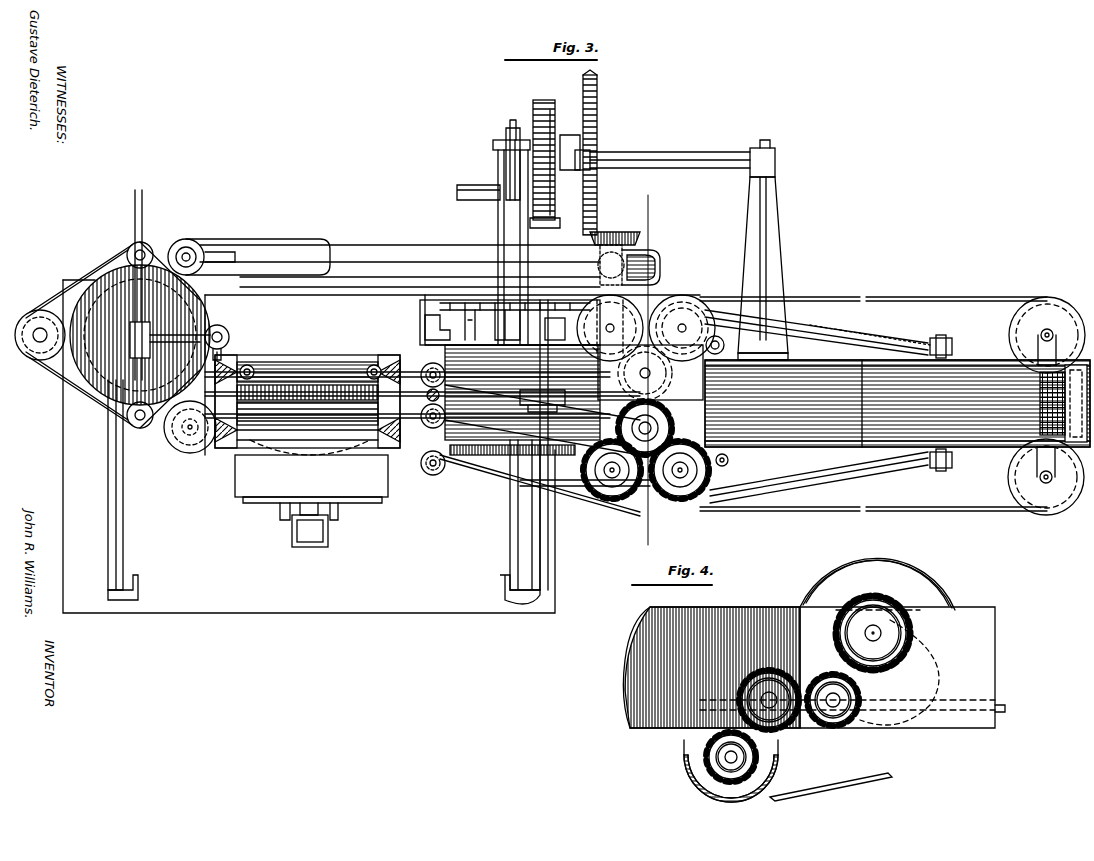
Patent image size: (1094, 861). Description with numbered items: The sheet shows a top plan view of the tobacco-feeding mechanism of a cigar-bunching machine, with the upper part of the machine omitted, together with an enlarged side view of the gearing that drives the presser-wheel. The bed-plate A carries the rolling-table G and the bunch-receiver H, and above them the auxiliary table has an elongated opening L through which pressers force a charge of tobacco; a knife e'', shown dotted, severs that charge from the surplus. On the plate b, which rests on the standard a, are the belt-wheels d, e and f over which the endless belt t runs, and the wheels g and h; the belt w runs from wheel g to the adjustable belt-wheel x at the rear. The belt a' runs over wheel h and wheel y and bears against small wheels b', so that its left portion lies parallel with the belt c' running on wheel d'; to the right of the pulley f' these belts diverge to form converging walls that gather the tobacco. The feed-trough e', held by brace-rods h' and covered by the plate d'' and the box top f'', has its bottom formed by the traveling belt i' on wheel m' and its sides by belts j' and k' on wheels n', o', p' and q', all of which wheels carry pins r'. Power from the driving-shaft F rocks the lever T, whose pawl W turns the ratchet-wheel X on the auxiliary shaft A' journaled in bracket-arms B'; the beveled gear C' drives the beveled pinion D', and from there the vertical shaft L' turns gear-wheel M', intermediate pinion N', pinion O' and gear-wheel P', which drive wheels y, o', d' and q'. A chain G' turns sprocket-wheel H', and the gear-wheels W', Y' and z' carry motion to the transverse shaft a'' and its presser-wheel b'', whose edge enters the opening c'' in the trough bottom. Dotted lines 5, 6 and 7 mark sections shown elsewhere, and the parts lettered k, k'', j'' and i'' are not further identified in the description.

In FIG. 3, the bed-plate A is at (309, 446).
In FIG. 3, the belt c' is at (452, 373).
In FIG. 4, the belt c' is at (809, 667).
In FIG. 3, the belt-wheel d is at (40, 335).
In FIG. 3, the section line 7 7 is at (270, 348).
In FIG. 3, the endless belt t is at (113, 335).
In FIG. 3, the belt-wheel e is at (143, 285).
In FIG. 3, the belt-wheel f is at (140, 422).
In FIG. 3, the belt-wheel g is at (192, 240).
In FIG. 3, the belt-wheel h is at (190, 437).
In FIG. 3, the knife e'' is at (272, 338).
In FIG. 3, the belt w is at (275, 245).
In FIG. 3, the plate b is at (224, 257).
In FIG. 3, the elongated opening L is at (307, 393).
In FIG. 3, the rolling-table G is at (304, 479).
In FIG. 3, the bunch-receiver H is at (315, 525).
In FIG. 3, the pulley f' is at (425, 382).
In FIG. 3, the presser-wheel b'' is at (491, 398).
In FIG. 4, the presser-wheel b'' is at (877, 584).
In FIG. 3, the endless belt a' is at (425, 463).
In FIG. 3, the small wheels b' is at (530, 485).
In FIG. 3, the feed table k is at (480, 445).
In FIG. 3, the transverse shaft a'' is at (527, 375).
In FIG. 3, the sprocket-wheel H' is at (510, 316).
In FIG. 3, the vertical shaft L' is at (538, 391).
In FIG. 3, the chain G' is at (530, 325).
In FIG. 3, the bracket-arms B' is at (644, 240).
In FIG. 3, the driving-shaft F is at (478, 200).
In FIG. 3, the rocking lever T is at (540, 165).
In FIG. 3, the pawl W is at (556, 150).
In FIG. 3, the ratchet-wheel X is at (550, 220).
In FIG. 4, the ratchet-wheel X is at (770, 672).
In FIG. 3, the beveled gear-wheel C' is at (599, 152).
In FIG. 3, the auxiliary driving-shaft A' is at (662, 154).
In FIG. 3, the beveled pinion-wheel D' is at (615, 227).
In FIG. 3, the belt-wheel x is at (640, 250).
In FIG. 3, the section line 5 5 is at (648, 369).
In FIG. 3, the belt-wheel d' is at (630, 311).
In FIG. 3, the pins r' is at (682, 328).
In FIG. 3, the belt-wheel q' is at (714, 307).
In FIG. 3, the plate f'' is at (650, 372).
In FIG. 3, the intermediate pinion N' is at (655, 425).
In FIG. 3, the pinion O' is at (661, 457).
In FIG. 3, the plate d'' is at (693, 429).
In FIG. 3, the gear-wheel M' is at (612, 483).
In FIG. 3, the gear-wheel P' is at (680, 483).
In FIG. 3, the belt-wheel o' is at (726, 455).
In FIG. 3, the belt-wheel y is at (569, 469).
In FIG. 3, the section line 6 6 is at (585, 497).
In FIG. 3, the endless traveling belt k' is at (897, 388).
In FIG. 3, the upper belt run k'' is at (873, 289).
In FIG. 3, the endless traveling belt j' is at (873, 515).
In FIG. 3, the coupling j'' is at (963, 458).
In FIG. 3, the brace-rods h' is at (828, 406).
In FIG. 3, the feed-trough e' is at (776, 460).
In FIG. 3, the belt-wheel p' is at (1047, 335).
In FIG. 3, the belt-wheel n' is at (1046, 477).
In FIG. 4, the elongated opening c'' is at (915, 736).
In FIG. 4, the standard a is at (878, 633).
In FIG. 4, the gear-wheel z' is at (926, 628).
In FIG. 4, the gear-wheel Y' is at (847, 700).
In FIG. 4, the gear-wheel W' is at (754, 757).
In FIG. 4, the belt-wheel m' is at (743, 771).
In FIG. 4, the endless traveling belt i' is at (831, 783).
In FIG. 4, the rod i'' is at (1003, 700).